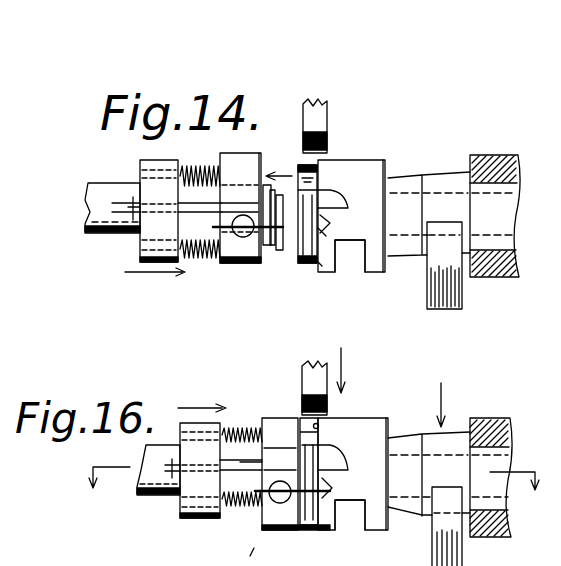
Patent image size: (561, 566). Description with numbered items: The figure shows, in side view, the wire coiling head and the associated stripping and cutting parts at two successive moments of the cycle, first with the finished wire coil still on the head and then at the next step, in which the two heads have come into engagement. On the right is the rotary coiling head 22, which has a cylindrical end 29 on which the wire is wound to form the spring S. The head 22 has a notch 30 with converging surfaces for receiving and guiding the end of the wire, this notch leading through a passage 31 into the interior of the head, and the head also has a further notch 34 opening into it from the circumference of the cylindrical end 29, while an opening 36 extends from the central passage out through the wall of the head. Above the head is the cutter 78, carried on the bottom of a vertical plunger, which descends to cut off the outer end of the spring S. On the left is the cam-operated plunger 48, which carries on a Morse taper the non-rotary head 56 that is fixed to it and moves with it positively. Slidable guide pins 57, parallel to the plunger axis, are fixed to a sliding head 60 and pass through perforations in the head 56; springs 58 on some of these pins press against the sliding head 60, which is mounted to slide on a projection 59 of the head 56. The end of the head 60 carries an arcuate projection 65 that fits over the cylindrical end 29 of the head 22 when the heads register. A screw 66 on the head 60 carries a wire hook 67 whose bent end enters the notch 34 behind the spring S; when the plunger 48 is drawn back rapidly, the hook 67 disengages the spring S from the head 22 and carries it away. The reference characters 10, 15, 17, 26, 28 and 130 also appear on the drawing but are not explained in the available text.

In FIG. 16, the section line 10- 10 is at (300, 471).
In FIG. 14, the direction arrow 15 is at (280, 169).
In FIG. 16, the direction arrow 17 is at (454, 404).
In FIG. 14, the wire coiling head 22 is at (370, 161).
In FIG. 16, the wire coiling head 22 is at (362, 420).
In FIG. 14, the shaft and wall 26 is at (474, 208).
In FIG. 14, the hanging bracket 28 is at (462, 293).
In FIG. 16, the hanging bracket 28 is at (462, 557).
In FIG. 14, the cylindrical end 29 is at (303, 264).
In FIG. 14, the notch 30 is at (333, 196).
In FIG. 16, the notch 30 is at (342, 456).
In FIG. 14, the passage 31 is at (281, 209).
In FIG. 14, the notch 34 is at (328, 222).
In FIG. 16, the notch 34 is at (333, 490).
In FIG. 14, the opening 36 is at (357, 266).
In FIG. 16, the opening 36 is at (357, 513).
In FIG. 14, the plunger 48 is at (87, 205).
In FIG. 16, the plunger 48 is at (157, 497).
In FIG. 14, the non-rotary head 56 is at (140, 176).
In FIG. 16, the non-rotary head 56 is at (190, 518).
In FIG. 14, the guide pins 57 is at (218, 209).
In FIG. 14, the springs 58 is at (205, 166).
In FIG. 16, the springs 58 is at (238, 427).
In FIG. 16, the projection 59 is at (250, 462).
In FIG. 14, the sliding head 60 is at (238, 156).
In FIG. 16, the sliding head 60 is at (288, 531).
In FIG. 14, the arcuate projection 65 is at (277, 190).
In FIG. 14, the screw 66 is at (243, 238).
In FIG. 16, the screw 66 is at (268, 500).
In FIG. 14, the hook 67 is at (272, 245).
In FIG. 14, the cutter 78 is at (335, 138).
In FIG. 16, the cutter 78 is at (305, 398).
In FIG. 16, the element 130 is at (238, 557).
In FIG. 14, the spring S is at (318, 266).
In FIG. 16, the spring S is at (320, 428).